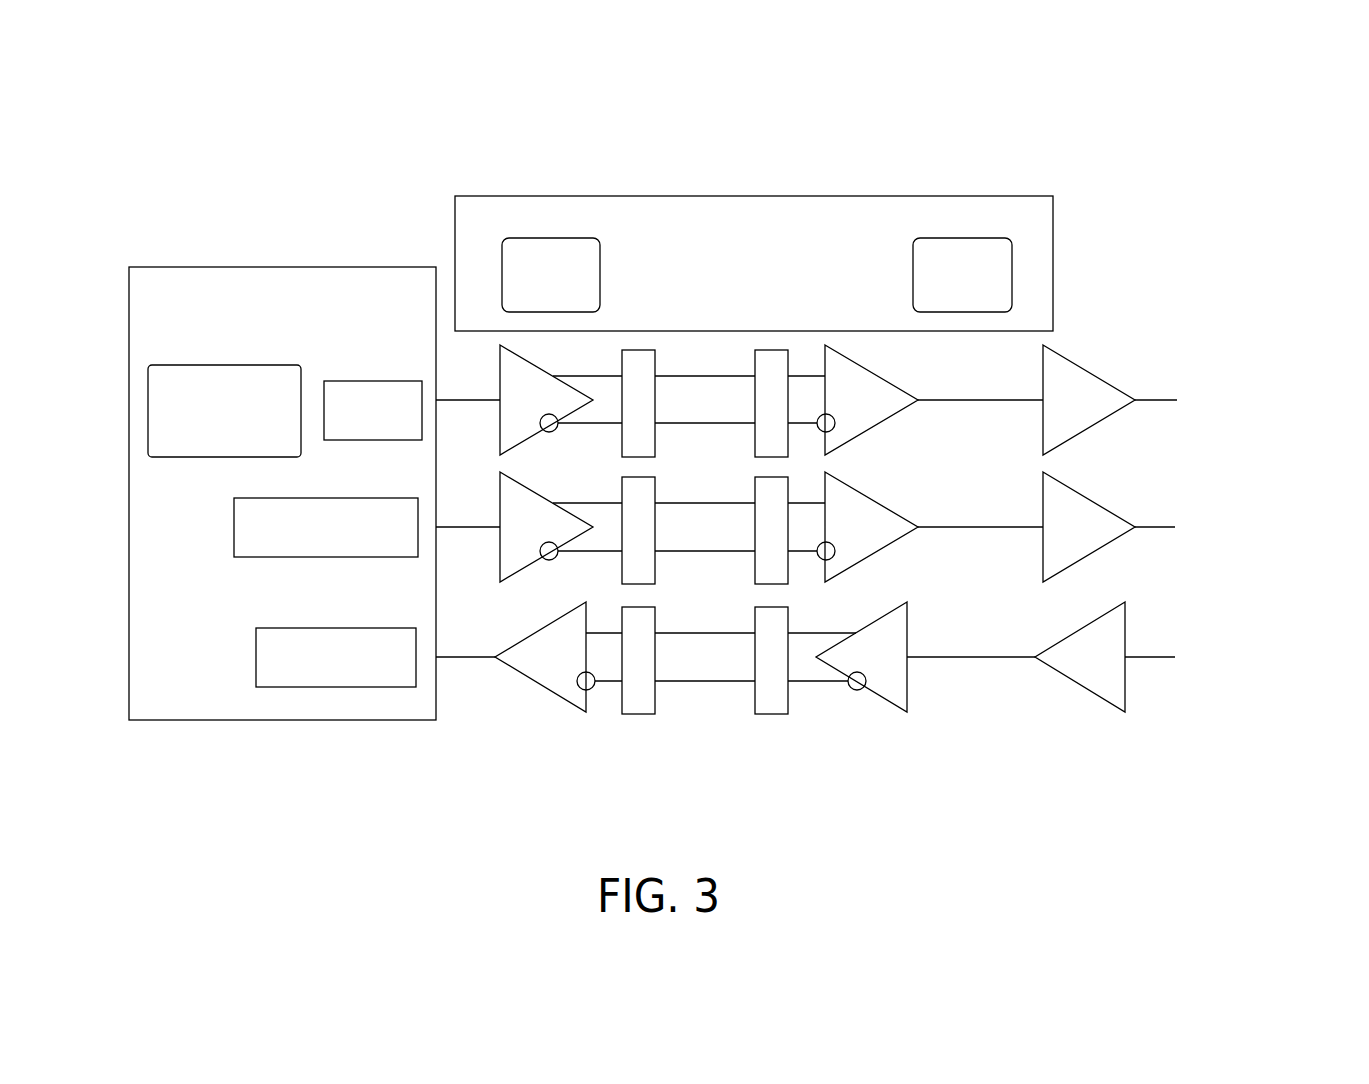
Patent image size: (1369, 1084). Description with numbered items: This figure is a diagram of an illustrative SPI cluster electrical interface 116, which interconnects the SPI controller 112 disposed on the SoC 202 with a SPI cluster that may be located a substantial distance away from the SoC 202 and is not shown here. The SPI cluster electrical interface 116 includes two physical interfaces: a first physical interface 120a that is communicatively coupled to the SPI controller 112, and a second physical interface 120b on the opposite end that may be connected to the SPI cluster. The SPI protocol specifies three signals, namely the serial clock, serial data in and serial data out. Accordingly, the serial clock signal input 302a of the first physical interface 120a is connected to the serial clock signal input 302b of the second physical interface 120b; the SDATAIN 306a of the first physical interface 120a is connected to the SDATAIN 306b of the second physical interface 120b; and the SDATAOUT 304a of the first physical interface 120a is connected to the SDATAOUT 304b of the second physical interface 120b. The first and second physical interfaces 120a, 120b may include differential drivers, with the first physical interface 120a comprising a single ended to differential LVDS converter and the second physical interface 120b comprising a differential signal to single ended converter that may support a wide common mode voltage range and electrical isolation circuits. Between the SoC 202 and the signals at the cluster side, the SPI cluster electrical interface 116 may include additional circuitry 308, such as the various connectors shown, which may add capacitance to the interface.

The SoC 202 is at (195, 267).
The SPI controller 112 is at (148, 400).
The serial clock signal input 302a is at (373, 381).
The SDATAOUT 304a is at (393, 474).
The SDATAIN 306a is at (355, 628).
The SPI cluster electrical interface 116 is at (760, 196).
The first physical interface 120a is at (533, 238).
The second physical interface 120b is at (985, 238).
The additional circuitry 308 is at (496, 730).
The serial clock signal input 302b is at (1255, 400).
The SDATAOUT 304b is at (1303, 522).
The SDATAIN 306b is at (1285, 657).